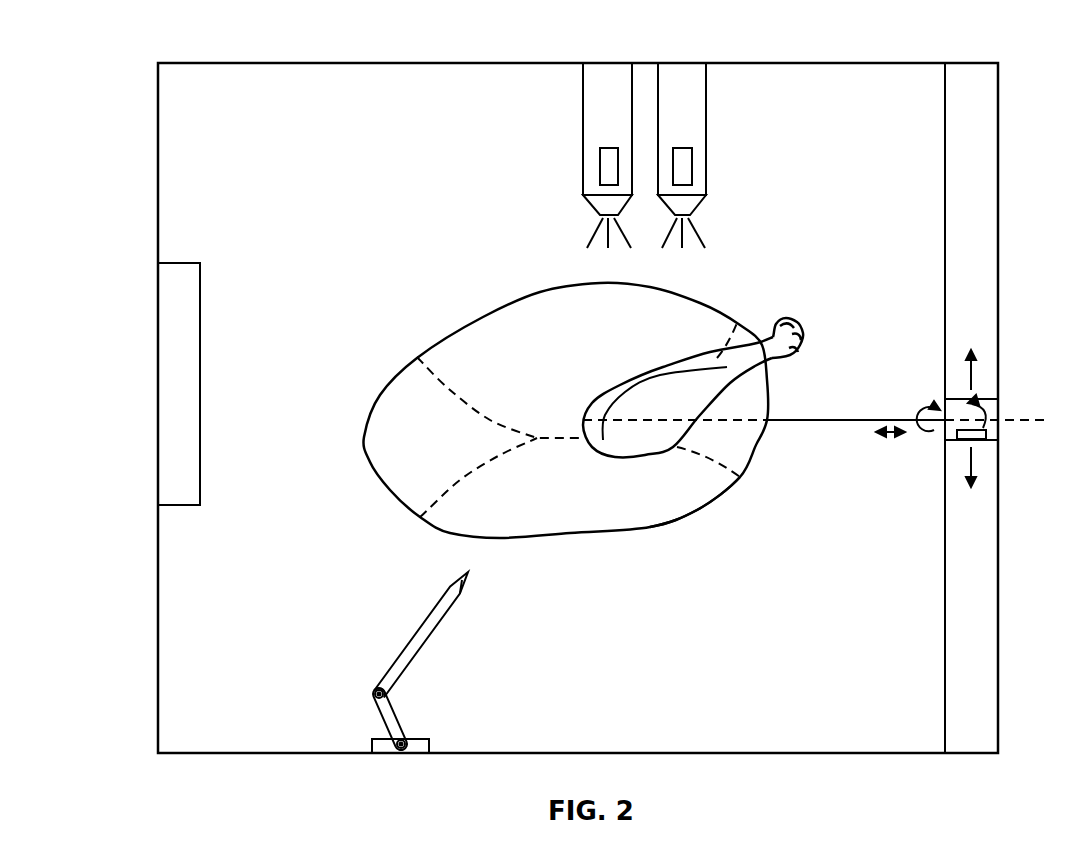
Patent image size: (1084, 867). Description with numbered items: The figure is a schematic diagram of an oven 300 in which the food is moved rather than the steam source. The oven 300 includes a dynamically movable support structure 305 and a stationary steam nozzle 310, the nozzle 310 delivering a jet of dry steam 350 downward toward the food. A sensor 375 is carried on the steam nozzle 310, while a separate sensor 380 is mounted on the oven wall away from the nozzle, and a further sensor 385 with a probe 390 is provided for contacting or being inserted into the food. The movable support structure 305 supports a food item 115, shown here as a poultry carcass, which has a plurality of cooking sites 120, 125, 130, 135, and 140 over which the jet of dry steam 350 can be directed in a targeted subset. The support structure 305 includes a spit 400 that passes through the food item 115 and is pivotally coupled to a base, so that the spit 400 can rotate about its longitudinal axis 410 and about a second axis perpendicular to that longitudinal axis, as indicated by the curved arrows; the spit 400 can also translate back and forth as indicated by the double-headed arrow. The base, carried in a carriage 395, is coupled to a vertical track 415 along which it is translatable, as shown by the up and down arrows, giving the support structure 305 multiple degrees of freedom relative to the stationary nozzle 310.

The oven 300 is at (236, 52).
The stationary steam nozzle 310 is at (583, 105).
The sensor 375 is at (600, 165).
The jet of dry steam 350 is at (580, 224).
The track 415 is at (945, 182).
The sensor 380 is at (168, 378).
The food item 115 is at (438, 320).
The cooking site 120 is at (725, 330).
The cooking site 140 is at (623, 397).
The cooking site 125 is at (752, 442).
The cooking site 130 is at (698, 496).
The cooking site 135 is at (380, 456).
The spit 400 is at (874, 418).
The longitudinal axis 410 is at (1012, 418).
The movable support structure 305 is at (932, 444).
The carriage 395 is at (978, 437).
The sensor 385 is at (422, 695).
The probe 390 is at (436, 616).